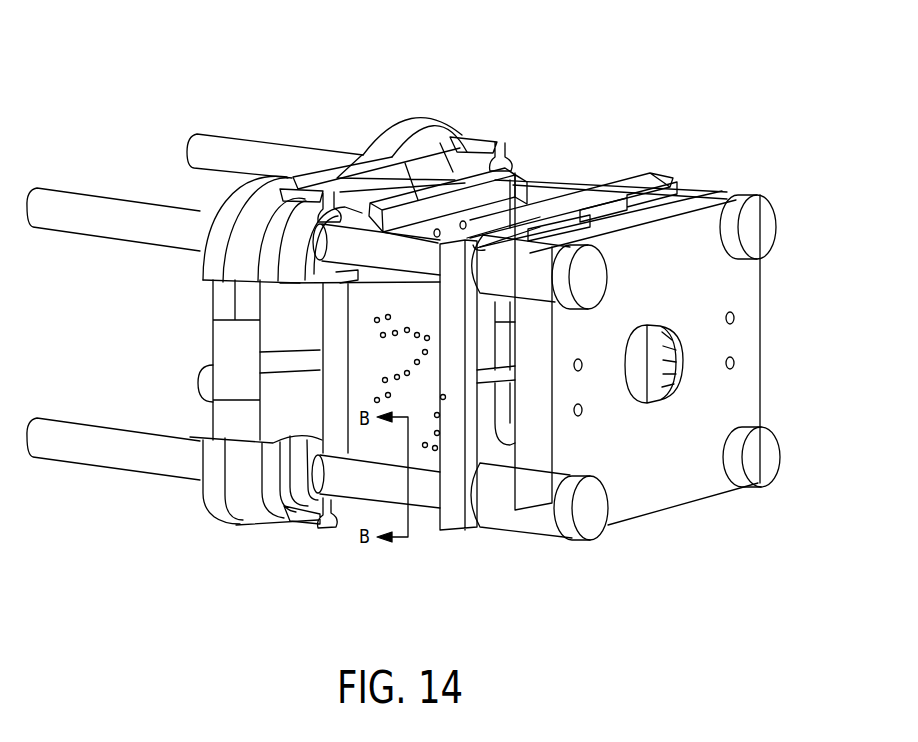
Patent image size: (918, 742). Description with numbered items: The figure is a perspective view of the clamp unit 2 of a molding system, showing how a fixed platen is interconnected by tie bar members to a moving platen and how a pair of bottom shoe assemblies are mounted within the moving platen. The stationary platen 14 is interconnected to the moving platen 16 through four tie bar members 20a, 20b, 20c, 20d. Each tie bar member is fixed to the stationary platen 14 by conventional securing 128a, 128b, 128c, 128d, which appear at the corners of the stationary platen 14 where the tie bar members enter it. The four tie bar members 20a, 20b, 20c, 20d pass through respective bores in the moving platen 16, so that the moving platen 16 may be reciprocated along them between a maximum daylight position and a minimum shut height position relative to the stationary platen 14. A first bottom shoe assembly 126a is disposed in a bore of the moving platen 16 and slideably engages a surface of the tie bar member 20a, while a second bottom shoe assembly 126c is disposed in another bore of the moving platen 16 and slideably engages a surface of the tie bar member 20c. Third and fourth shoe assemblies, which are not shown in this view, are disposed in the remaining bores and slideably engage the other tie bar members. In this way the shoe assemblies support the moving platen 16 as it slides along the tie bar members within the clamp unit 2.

The clamp unit 2 is at (553, 87).
The stationary platen 14 is at (710, 192).
The moving platen 16 is at (433, 122).
The tie bar member 20a is at (85, 190).
The tie bar member 20b is at (243, 130).
The tie bar member 20c is at (85, 420).
The tie bar member 20d is at (195, 388).
The first bottom shoe assembly 126a is at (300, 273).
The second bottom shoe assembly 126c is at (300, 498).
The conventional securing 128a is at (588, 277).
The conventional securing 128b is at (757, 225).
The conventional securing 128c is at (590, 510).
The conventional securing 128d is at (753, 460).